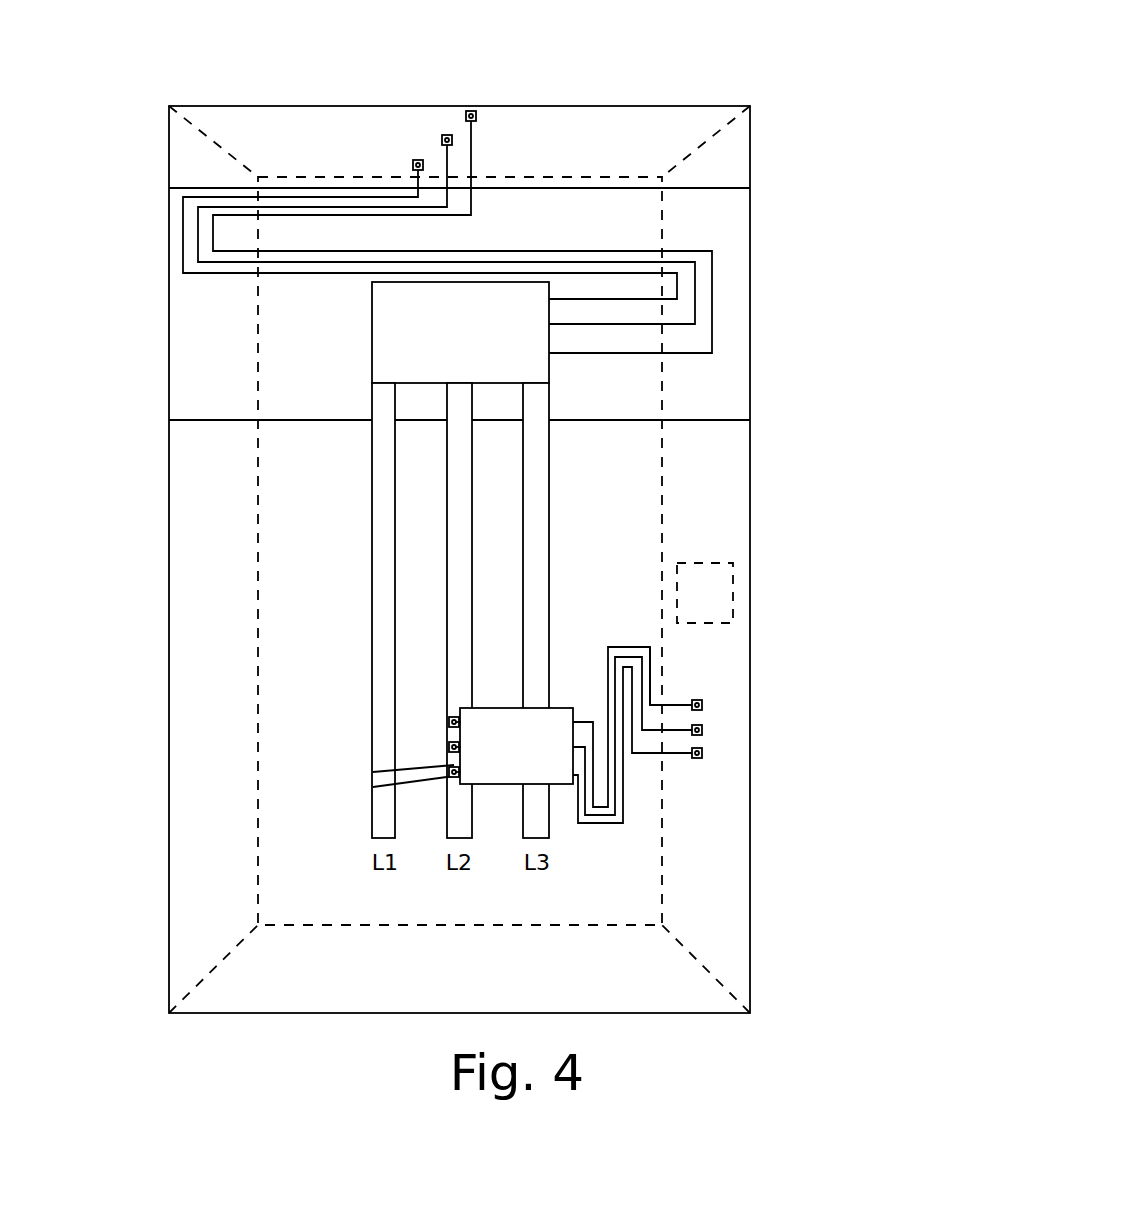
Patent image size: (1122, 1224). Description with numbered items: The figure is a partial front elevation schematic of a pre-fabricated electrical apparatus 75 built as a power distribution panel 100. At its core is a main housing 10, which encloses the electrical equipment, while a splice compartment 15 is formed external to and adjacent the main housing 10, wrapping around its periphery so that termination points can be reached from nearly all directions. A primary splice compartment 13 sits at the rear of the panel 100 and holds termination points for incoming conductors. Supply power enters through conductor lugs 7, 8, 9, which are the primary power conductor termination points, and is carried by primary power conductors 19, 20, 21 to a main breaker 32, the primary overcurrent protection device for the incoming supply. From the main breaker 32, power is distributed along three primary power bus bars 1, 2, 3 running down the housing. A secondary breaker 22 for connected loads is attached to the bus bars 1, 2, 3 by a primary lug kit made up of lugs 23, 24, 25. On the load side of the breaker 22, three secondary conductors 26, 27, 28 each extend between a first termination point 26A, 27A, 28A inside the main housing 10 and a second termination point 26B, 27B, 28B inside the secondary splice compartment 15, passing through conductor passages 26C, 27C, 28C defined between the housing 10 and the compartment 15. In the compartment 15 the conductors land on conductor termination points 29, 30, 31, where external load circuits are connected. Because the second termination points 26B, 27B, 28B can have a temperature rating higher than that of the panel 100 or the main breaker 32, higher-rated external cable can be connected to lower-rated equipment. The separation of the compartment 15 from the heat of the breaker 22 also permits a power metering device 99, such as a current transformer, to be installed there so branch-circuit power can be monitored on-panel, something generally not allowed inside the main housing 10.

The primary splice compartment 13 is at (378, 85).
The secondary splice compartment 15 is at (593, 152).
The main housing 10 is at (162, 305).
The distribution panel 100 is at (790, 420).
The pre-fabricated electrical apparatus 75 is at (803, 41).
The conductor lug 7 is at (418, 160).
The conductor lug 8 is at (447, 135).
The conductor lug 9 is at (471, 110).
The primary power conductor 19 is at (372, 197).
The primary power conductor 20 is at (397, 207).
The primary power conductor 21 is at (473, 203).
The main breaker 32 is at (416, 344).
The primary power bus bar 1 is at (379, 492).
The primary power bus bar 2 is at (453, 492).
The primary power bus bar 3 is at (531, 492).
The secondary breaker 22 is at (510, 767).
The primary lug 23 is at (452, 717).
The primary lug 24 is at (449, 747).
The primary lug 25 is at (375, 773).
The conductor 26 is at (645, 650).
The first termination point 26A is at (460, 723).
The second termination point 26B is at (696, 700).
The conductor passage 26C is at (665, 700).
The conductor 27 is at (615, 697).
The first termination point 27A is at (460, 747).
The second termination point 27B is at (703, 737).
The conductor passage 27C is at (665, 735).
The conductor 28 is at (623, 767).
The first termination point 28A is at (460, 772).
The second termination point 28B is at (698, 760).
The conductor passage 28C is at (665, 758).
The conductor termination point 29 is at (703, 703).
The conductor termination point 30 is at (703, 728).
The conductor termination point 31 is at (703, 752).
The power metering device 99 is at (733, 588).